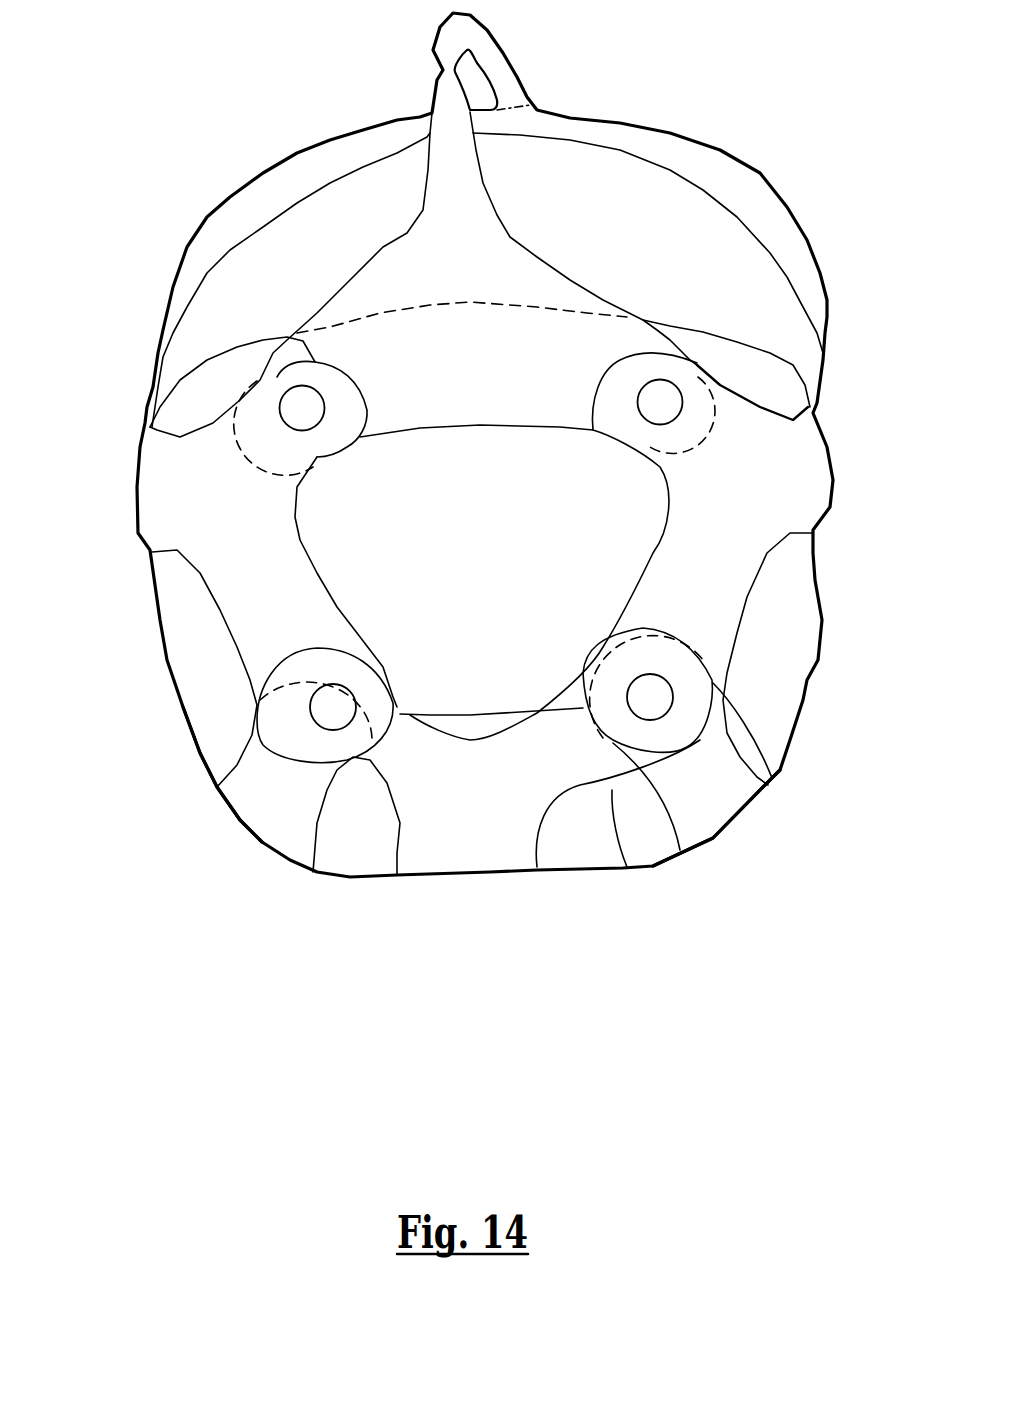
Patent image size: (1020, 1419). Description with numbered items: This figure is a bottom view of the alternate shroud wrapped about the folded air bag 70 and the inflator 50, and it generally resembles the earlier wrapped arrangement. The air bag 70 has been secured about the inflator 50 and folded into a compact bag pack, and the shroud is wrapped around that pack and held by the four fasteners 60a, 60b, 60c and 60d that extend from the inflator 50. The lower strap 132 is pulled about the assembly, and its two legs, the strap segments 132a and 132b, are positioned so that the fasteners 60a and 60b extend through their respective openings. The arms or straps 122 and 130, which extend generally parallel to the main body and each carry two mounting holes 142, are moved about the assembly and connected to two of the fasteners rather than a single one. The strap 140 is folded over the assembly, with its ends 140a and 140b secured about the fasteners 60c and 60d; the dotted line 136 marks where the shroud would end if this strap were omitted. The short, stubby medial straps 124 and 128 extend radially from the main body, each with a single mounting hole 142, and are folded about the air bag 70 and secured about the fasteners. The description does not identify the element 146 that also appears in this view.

The inflator 50 is at (557, 575).
The fastener 60a is at (337, 717).
The fastener 60b is at (650, 697).
The fastener 60c is at (297, 417).
The fastener 60d is at (653, 410).
The air bag 70 is at (207, 360).
The arm or strap 122 is at (263, 637).
The arm or strap 124 is at (240, 778).
The arm or strap 128 is at (720, 798).
The arm or strap 130 is at (773, 477).
The lower strap 132 is at (567, 767).
The strap segment 132a is at (343, 747).
The strap segment 132b is at (613, 763).
The dotted line 136 is at (530, 90).
The arm or strap 140 is at (500, 77).
The strap end 140a is at (303, 341).
The strap end 140b is at (520, 330).
The mounting hole 142 is at (307, 387).
The tab 146 is at (440, 98).